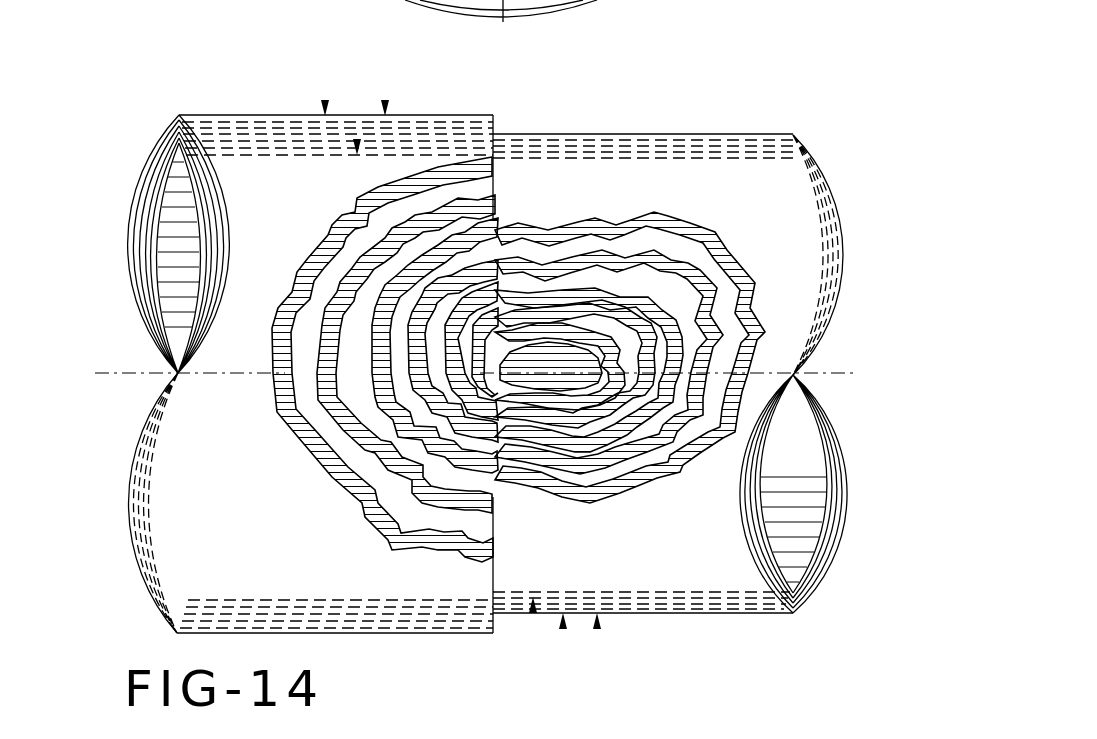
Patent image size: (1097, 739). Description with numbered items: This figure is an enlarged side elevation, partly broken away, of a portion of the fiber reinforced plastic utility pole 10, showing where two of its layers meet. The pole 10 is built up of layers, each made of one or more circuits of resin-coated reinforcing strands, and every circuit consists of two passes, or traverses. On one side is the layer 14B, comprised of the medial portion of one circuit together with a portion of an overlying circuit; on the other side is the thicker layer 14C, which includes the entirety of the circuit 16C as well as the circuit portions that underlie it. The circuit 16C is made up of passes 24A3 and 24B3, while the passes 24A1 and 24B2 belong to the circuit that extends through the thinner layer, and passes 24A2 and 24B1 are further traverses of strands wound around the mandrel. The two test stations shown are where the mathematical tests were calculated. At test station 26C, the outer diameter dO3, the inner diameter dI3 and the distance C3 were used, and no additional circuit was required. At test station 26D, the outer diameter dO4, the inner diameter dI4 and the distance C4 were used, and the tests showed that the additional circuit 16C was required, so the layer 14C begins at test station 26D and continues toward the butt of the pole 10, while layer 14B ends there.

The utility pole 10 is at (770, 97).
The test station 26D is at (455, 116).
The test station 26C is at (525, 134).
The circuit 16C is at (502, 112).
The layer 14C is at (311, 503).
The layer 14B is at (643, 584).
The pass 24B3 is at (217, 440).
The pass 24A3 is at (333, 443).
The pass 24A2 is at (852, 572).
The pass 24B2 is at (797, 241).
The pass 24A1 is at (797, 437).
The pass 24B1 is at (805, 572).
The distance c4 C4 is at (325, 101).
The inner diameter dI4 is at (357, 140).
The outer diameter dO4 is at (385, 101).
The inner diameter dI3 is at (533, 612).
The outer diameter dO3 is at (563, 628).
The distance c3 C3 is at (597, 628).